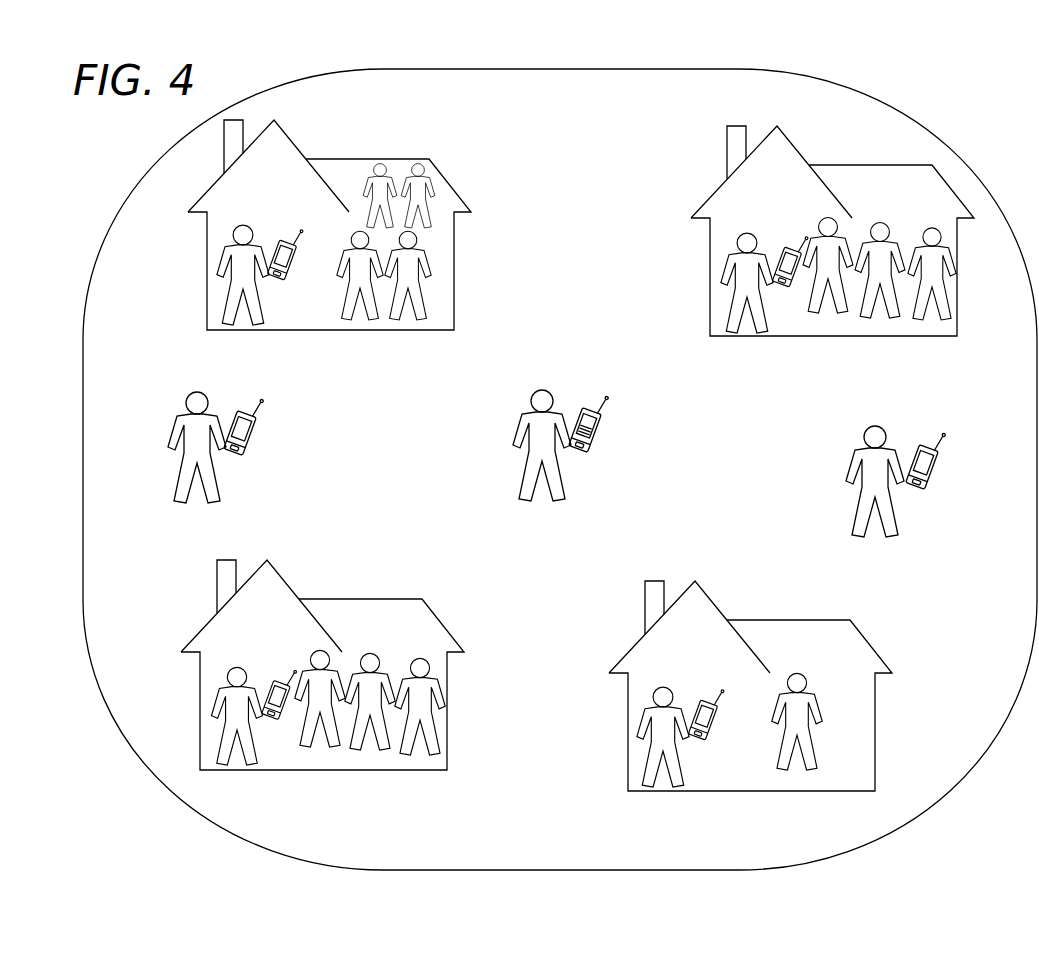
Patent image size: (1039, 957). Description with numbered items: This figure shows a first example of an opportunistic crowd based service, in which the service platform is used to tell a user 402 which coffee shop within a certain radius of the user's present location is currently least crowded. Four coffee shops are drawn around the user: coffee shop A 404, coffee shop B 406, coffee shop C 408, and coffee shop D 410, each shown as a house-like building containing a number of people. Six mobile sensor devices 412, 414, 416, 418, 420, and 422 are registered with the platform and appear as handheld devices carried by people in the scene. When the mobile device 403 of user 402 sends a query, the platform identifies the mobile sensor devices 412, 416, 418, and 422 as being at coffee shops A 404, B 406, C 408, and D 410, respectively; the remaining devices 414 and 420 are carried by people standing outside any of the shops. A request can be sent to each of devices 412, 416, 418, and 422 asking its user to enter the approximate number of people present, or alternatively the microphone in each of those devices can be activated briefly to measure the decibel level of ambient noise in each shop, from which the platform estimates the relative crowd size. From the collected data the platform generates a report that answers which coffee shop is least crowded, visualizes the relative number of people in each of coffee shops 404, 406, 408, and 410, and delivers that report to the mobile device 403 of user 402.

The user 402 is at (543, 388).
The mobile device 403 is at (600, 428).
The coffee shop A 404 is at (329, 244).
The coffee shop B 406 is at (322, 688).
The coffee shop C 408 is at (750, 713).
The coffee shop D 410 is at (832, 260).
The mobile sensor device 412 is at (288, 277).
The mobile sensor device 414 is at (257, 438).
The mobile sensor device 416 is at (275, 720).
The mobile sensor device 418 is at (700, 740).
The mobile sensor device 420 is at (938, 460).
The mobile sensor device 422 is at (782, 295).